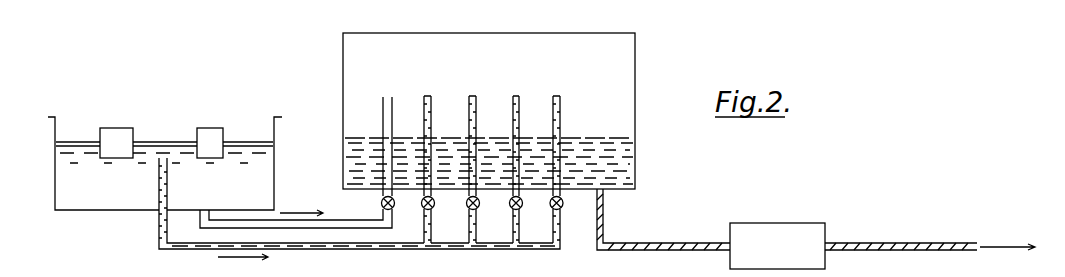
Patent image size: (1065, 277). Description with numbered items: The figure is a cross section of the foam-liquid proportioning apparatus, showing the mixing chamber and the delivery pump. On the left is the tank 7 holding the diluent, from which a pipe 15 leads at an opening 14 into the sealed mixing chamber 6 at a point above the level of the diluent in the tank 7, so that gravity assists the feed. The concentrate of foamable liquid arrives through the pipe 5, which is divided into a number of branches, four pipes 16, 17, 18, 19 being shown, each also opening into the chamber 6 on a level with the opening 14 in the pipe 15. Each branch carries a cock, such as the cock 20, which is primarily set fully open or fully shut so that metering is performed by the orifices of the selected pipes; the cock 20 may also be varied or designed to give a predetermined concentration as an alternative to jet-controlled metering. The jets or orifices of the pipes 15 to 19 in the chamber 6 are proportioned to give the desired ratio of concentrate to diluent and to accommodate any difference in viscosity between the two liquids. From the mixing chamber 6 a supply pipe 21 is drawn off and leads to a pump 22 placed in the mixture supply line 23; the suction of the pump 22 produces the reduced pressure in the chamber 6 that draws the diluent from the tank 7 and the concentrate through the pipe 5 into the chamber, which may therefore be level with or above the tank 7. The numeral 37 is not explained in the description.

The pipe 5 is at (192, 250).
The mixing chamber 6 is at (620, 68).
The tank 7 is at (267, 173).
The opening 14 is at (388, 92).
The pipe 15 is at (342, 225).
The pipe 16 is at (428, 93).
The pipe 17 is at (473, 93).
The pipe 18 is at (517, 93).
The pipe 19 is at (557, 93).
The cock 20 is at (435, 202).
The supply pipe 21 is at (635, 242).
The pump 22 is at (767, 230).
The mixture supply line 23 is at (882, 242).
The valve 37 is at (395, 202).